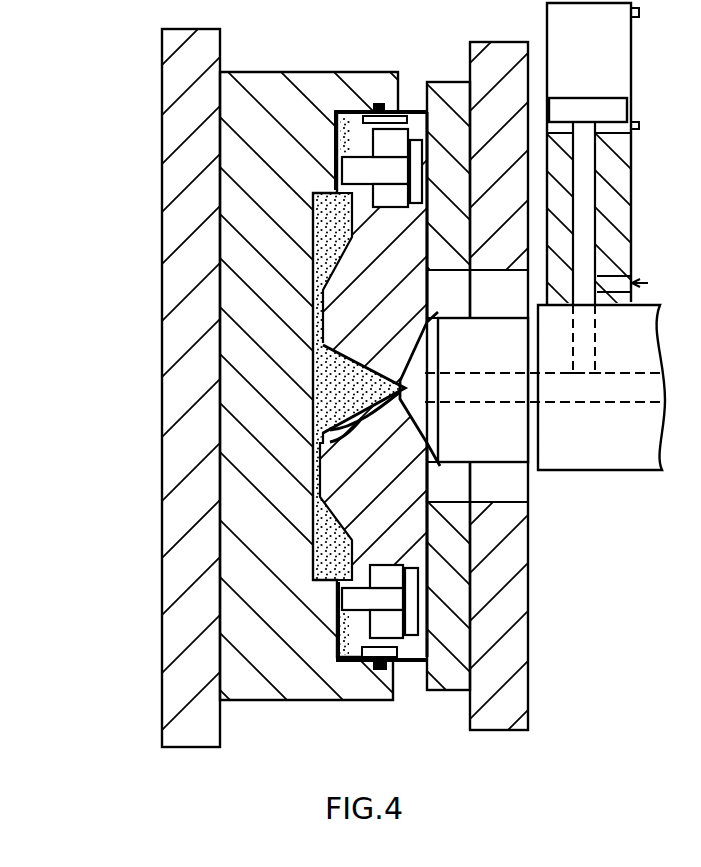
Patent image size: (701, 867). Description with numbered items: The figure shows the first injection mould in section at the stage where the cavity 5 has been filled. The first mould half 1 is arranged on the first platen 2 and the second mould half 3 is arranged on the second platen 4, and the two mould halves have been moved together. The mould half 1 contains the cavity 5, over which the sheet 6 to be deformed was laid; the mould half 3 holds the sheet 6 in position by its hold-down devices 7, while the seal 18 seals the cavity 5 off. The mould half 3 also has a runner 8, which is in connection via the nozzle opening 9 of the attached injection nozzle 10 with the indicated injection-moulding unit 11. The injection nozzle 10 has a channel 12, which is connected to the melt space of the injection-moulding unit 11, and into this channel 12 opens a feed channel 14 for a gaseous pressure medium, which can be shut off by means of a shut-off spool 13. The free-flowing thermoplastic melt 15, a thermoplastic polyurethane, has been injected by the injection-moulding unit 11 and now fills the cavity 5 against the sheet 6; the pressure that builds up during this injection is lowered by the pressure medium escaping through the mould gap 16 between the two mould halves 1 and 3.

The first mould half 1 is at (297, 682).
The first platen 2 is at (204, 733).
The second mould half 3 is at (452, 675).
The second platen 4 is at (498, 707).
The cavity 5 is at (315, 372).
The thermoplastic melt 15 is at (332, 386).
The sheet 6 is at (328, 398).
The hold-down devices 7 is at (383, 167).
The runner 8 is at (343, 443).
The nozzle opening 9 is at (418, 392).
The injection nozzle 10 is at (522, 418).
The injection-moulding unit 11 is at (623, 355).
The channel 12 is at (493, 392).
The shut-off spool 13 is at (588, 178).
The feed channel 14 is at (597, 353).
The mould gap 16 is at (397, 661).
The seal 18 is at (376, 104).